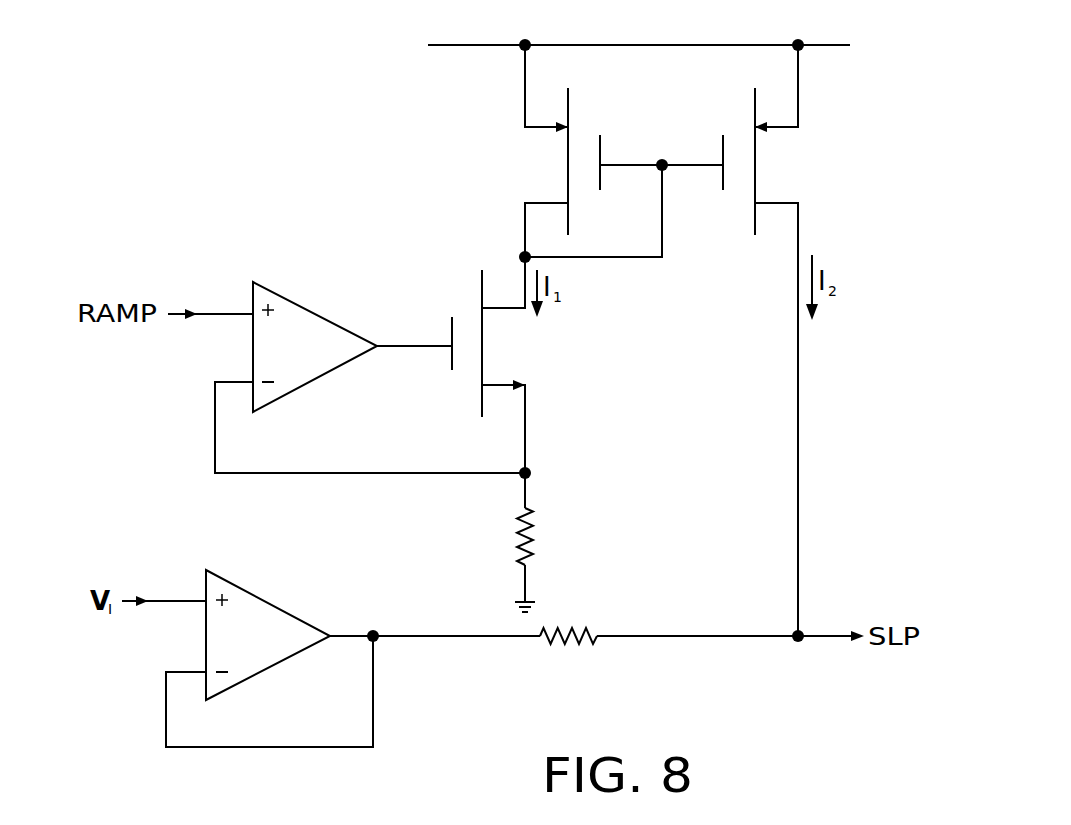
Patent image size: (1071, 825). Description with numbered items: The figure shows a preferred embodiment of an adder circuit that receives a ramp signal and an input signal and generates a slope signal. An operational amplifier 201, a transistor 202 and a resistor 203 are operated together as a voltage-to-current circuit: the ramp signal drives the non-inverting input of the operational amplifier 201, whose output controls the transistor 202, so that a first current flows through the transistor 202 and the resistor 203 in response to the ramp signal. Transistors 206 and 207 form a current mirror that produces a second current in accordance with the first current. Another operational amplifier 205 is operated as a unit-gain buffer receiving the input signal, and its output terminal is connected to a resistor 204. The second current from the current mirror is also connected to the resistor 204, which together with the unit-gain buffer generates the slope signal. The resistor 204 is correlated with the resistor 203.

The operational amplifier 201 is at (327, 317).
The transistor 202 is at (528, 345).
The resistor 203 is at (513, 541).
The resistor 204 is at (562, 623).
The operational amplifier 205 is at (280, 608).
The transistor 206 is at (545, 170).
The transistor 207 is at (733, 207).